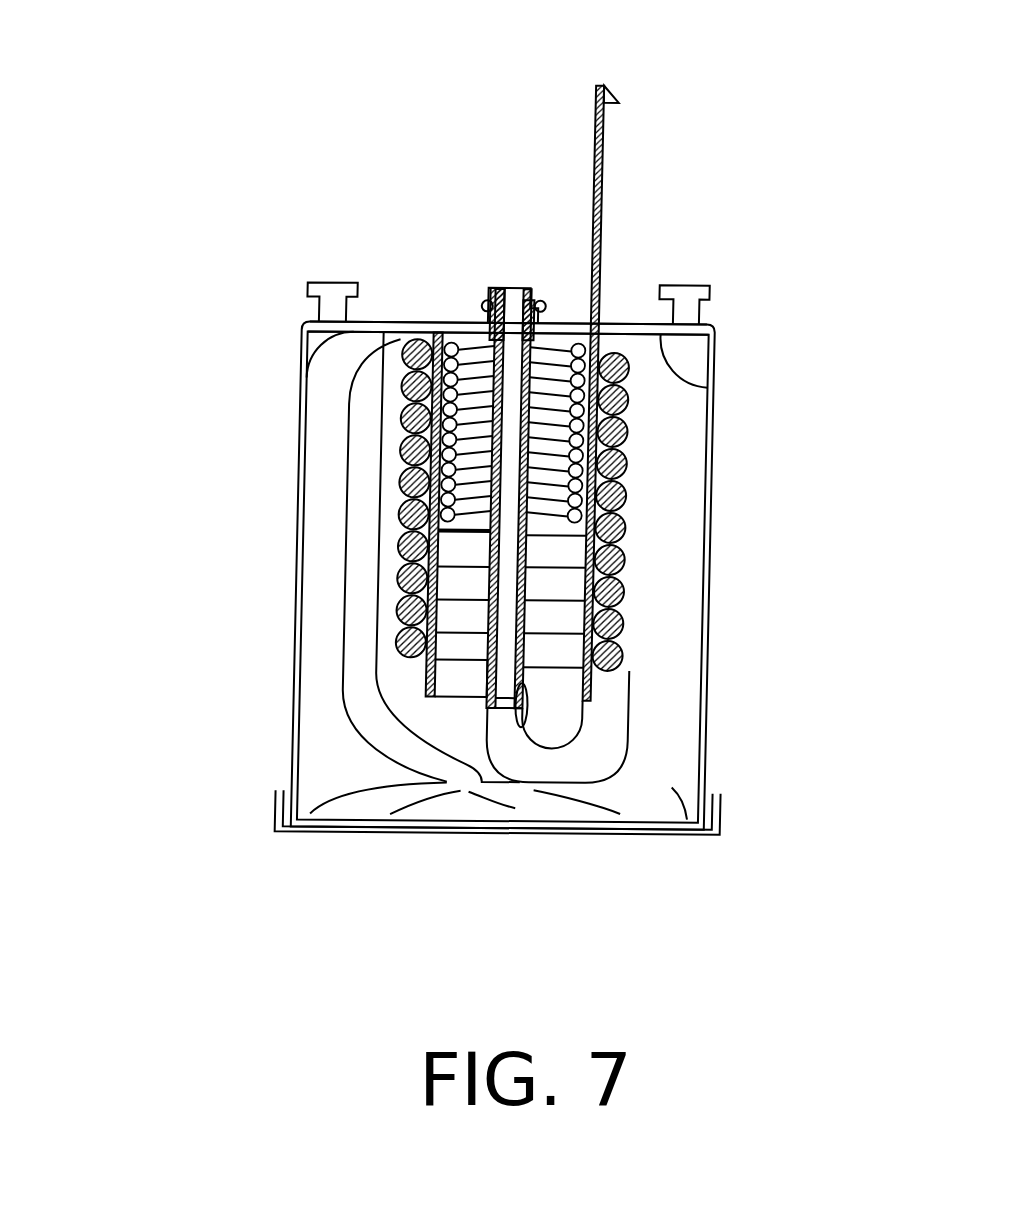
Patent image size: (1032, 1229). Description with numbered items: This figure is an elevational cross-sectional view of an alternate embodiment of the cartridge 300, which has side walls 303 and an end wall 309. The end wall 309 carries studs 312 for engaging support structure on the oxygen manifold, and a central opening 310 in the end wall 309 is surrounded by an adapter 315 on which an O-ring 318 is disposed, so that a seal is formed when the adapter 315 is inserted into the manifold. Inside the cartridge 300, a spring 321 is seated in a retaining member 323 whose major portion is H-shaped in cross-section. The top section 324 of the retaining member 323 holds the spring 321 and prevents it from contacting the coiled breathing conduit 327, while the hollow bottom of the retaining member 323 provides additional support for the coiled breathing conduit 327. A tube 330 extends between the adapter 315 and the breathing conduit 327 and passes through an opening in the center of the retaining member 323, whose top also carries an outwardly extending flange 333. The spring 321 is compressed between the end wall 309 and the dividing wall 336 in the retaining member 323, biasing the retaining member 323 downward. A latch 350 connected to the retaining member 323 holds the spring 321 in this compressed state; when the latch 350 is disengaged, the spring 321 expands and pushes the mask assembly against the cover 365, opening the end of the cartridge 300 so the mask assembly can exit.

The cartridge 300 is at (245, 589).
The side walls 303 is at (300, 463).
The end wall 309 is at (387, 322).
The central opening 310 is at (505, 272).
The studs 312 is at (724, 317).
The adapter 315 is at (542, 304).
The O-ring 318 is at (487, 300).
The spring 321 is at (563, 503).
The retaining member 323 is at (437, 504).
The top section 324 is at (402, 406).
The coiled breathing conduit 327 is at (626, 620).
The tube 330 is at (522, 712).
The flange 333 is at (303, 381).
The dividing wall 336 is at (432, 620).
The latch 350 is at (616, 97).
The cover 365 is at (720, 812).